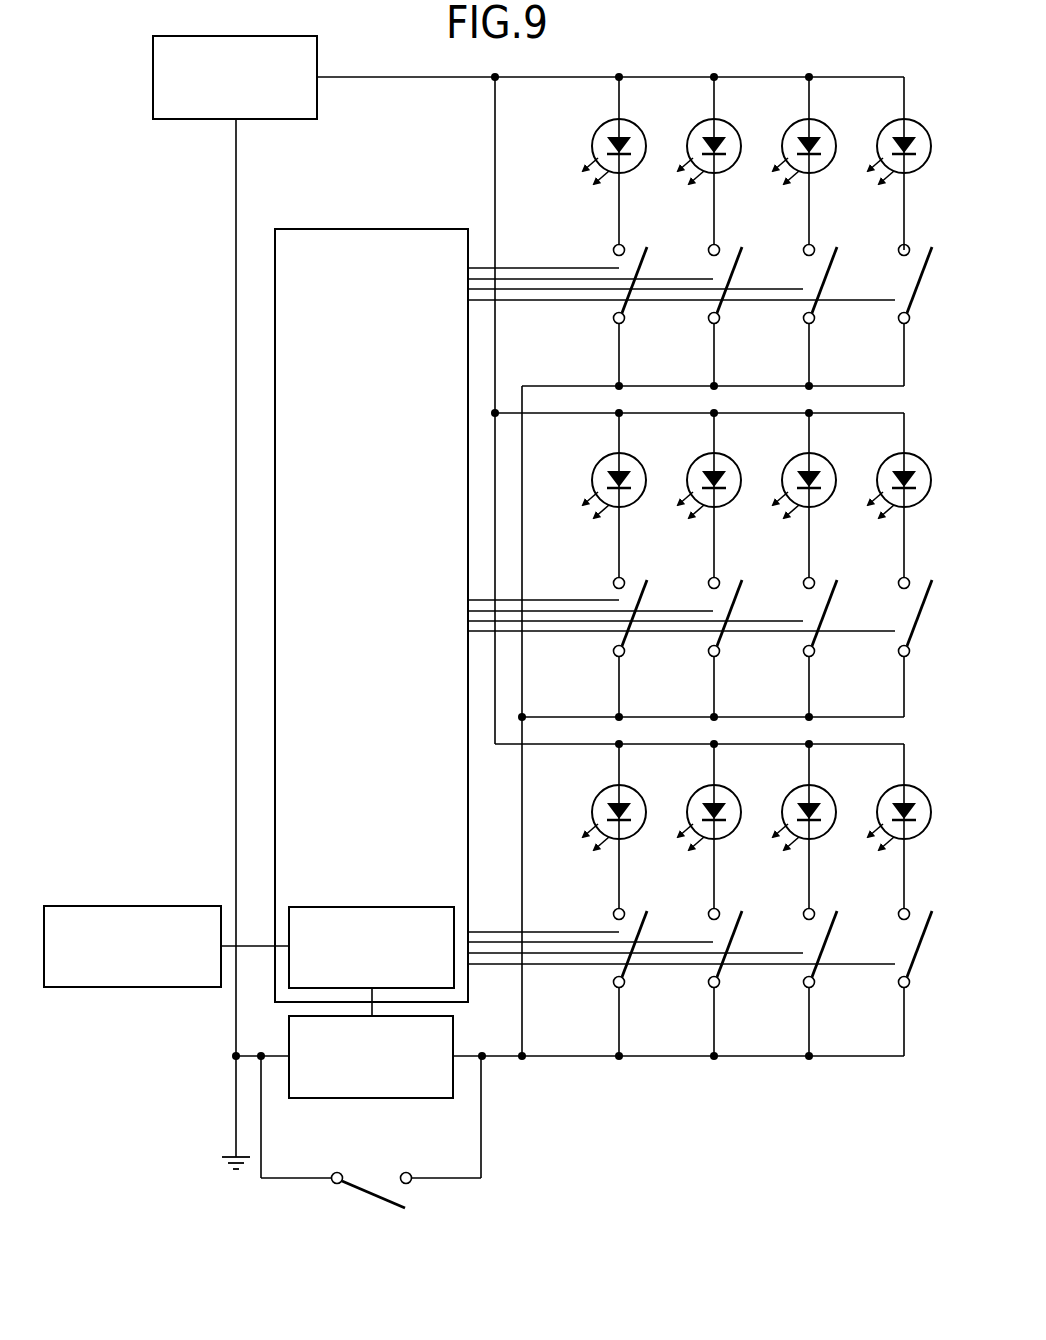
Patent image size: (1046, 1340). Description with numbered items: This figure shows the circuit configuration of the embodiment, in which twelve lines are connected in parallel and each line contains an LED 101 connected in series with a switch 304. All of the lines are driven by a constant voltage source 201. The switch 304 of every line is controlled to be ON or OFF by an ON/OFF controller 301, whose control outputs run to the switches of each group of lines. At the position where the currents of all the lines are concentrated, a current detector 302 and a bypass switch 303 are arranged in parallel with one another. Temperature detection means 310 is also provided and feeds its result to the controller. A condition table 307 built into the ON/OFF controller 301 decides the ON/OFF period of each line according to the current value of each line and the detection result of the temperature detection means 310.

The LED 101 is at (596, 130).
The constant voltage source 201 is at (152, 75).
The ON/OFF controller 301 is at (371, 229).
The current detector 302 is at (372, 1099).
The bypass switch 303 is at (366, 1204).
The switch 304 is at (706, 933).
The condition table 307 is at (371, 907).
The temperature detection means 310 is at (131, 906).